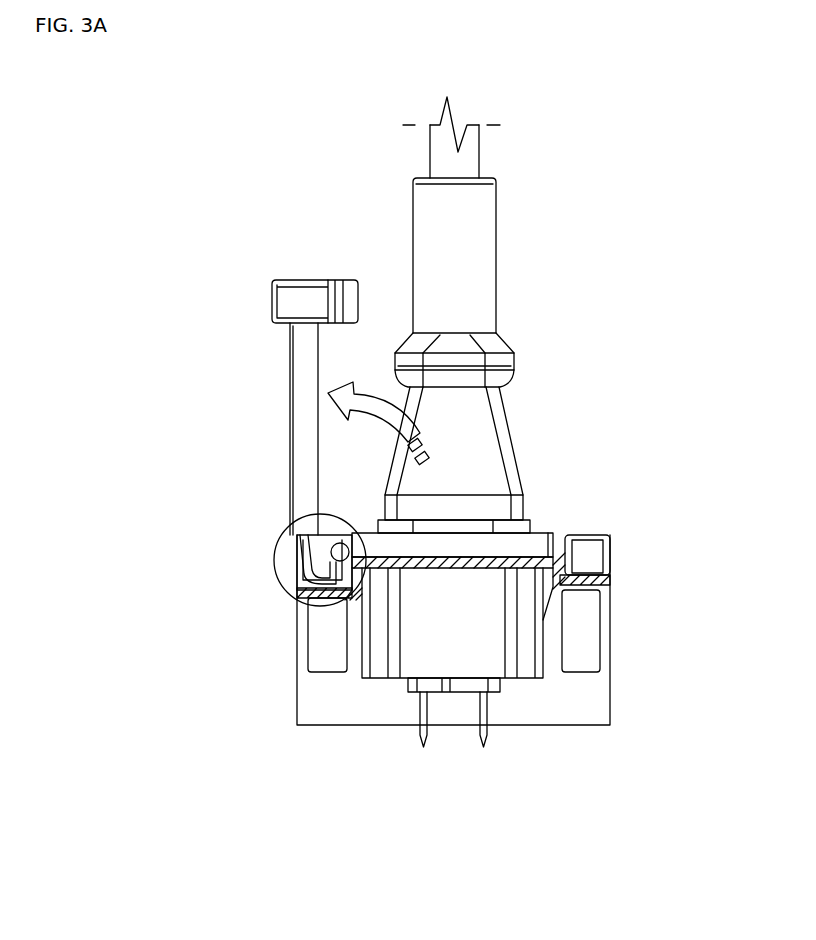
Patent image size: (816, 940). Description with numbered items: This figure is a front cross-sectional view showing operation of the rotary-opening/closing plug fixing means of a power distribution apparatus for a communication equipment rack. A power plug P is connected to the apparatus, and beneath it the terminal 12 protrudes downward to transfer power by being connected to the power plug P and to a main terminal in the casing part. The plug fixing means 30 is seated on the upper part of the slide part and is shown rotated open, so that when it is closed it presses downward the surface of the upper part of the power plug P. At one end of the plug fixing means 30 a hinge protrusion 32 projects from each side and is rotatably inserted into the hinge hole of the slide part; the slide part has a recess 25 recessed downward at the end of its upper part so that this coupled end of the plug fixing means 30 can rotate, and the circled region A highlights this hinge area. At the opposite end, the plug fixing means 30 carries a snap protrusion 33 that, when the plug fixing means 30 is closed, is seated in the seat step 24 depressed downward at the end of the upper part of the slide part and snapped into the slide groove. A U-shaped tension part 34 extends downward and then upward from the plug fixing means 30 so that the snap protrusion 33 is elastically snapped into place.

The power plug P is at (485, 308).
The plug fixing means 30 is at (284, 397).
The U-shaped tension part 34 is at (273, 300).
The snap protrusion 33 is at (345, 292).
The hinge protrusion 32 is at (300, 556).
The recess 25 is at (288, 598).
The detail portion A is at (318, 606).
The seat step 24 is at (590, 533).
The terminal 12 is at (488, 732).